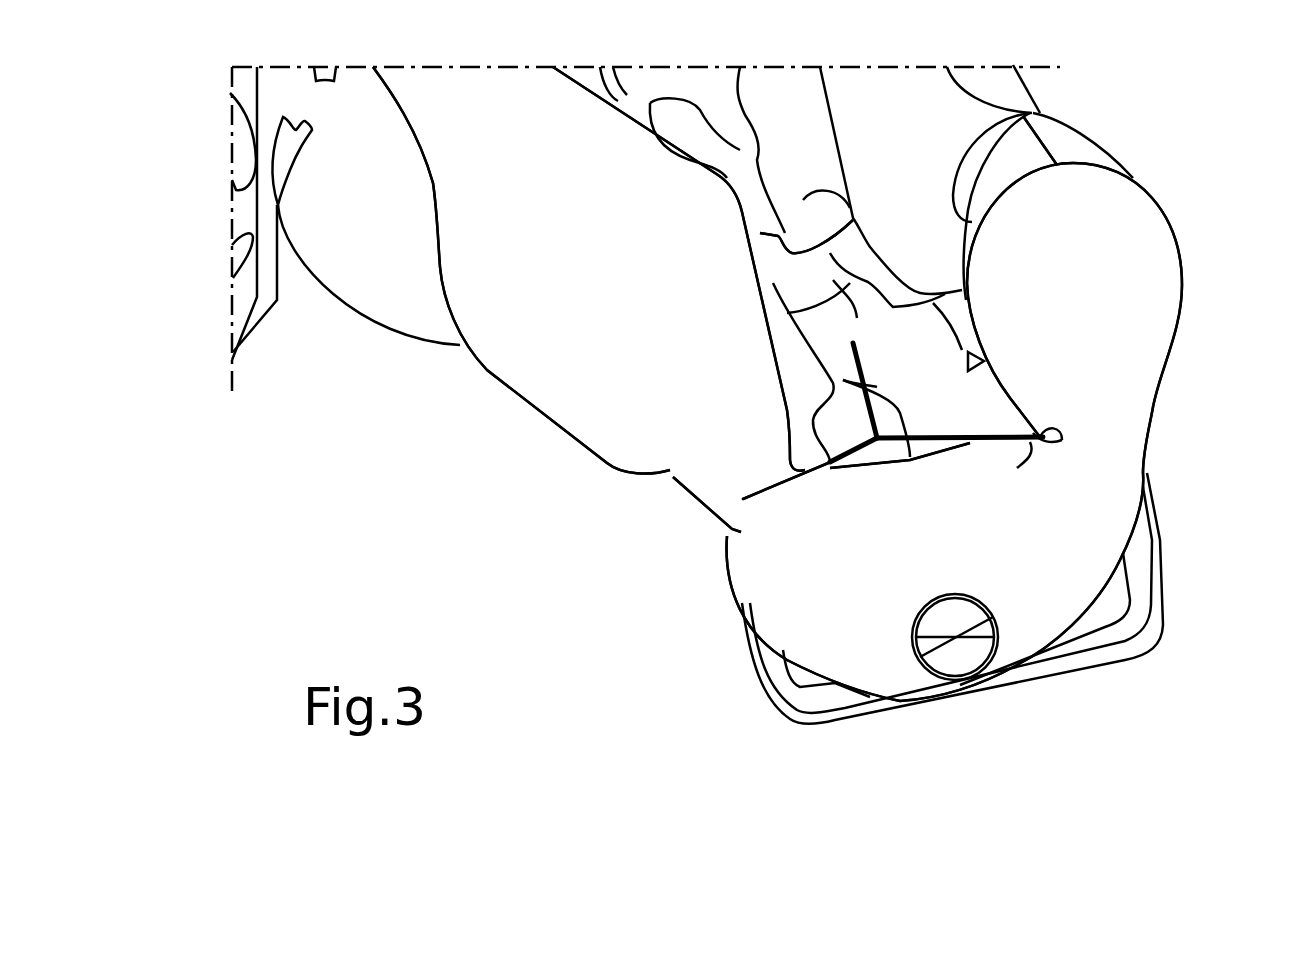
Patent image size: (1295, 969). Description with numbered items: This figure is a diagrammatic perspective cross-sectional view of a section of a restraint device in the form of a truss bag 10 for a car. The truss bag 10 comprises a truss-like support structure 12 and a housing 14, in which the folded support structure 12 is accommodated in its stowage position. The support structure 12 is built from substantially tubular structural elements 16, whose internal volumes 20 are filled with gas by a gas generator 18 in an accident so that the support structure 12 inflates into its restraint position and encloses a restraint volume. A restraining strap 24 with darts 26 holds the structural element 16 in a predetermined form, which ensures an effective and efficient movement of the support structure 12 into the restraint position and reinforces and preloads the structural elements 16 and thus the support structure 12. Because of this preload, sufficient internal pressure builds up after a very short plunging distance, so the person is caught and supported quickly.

The truss bag 10 is at (1167, 686).
The truss-like support structure 12 is at (1112, 143).
The housing 14 is at (1170, 553).
The structural elements 16 is at (795, 338).
The gas generator 18 is at (977, 660).
The internal volumes 20 is at (601, 288).
The restraining strap 24 is at (852, 398).
The darts 26 is at (996, 418).